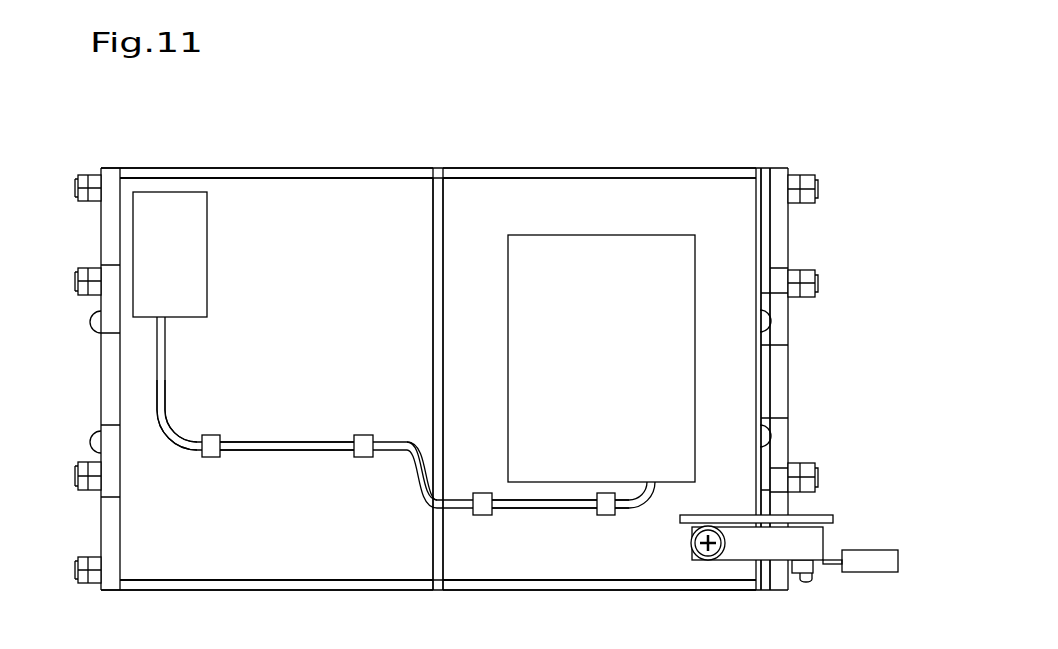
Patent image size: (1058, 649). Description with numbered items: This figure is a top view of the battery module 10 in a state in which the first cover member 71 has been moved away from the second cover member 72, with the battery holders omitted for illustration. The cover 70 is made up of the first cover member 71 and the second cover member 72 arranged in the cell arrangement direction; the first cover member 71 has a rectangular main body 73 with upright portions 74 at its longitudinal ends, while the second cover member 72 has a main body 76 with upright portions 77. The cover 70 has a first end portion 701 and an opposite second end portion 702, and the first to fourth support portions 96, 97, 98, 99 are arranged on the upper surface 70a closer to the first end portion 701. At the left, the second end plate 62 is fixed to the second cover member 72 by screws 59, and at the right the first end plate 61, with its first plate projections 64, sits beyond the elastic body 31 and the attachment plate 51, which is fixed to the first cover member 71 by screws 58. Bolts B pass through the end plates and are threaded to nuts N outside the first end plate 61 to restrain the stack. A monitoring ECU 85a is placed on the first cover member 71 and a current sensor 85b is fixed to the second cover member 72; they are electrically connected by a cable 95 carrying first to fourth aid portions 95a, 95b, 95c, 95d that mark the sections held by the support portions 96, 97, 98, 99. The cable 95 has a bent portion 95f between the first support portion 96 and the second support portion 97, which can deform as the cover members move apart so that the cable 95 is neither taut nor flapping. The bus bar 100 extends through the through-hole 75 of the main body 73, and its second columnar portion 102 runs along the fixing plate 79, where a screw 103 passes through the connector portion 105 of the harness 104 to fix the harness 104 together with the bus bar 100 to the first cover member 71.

The battery module 10 is at (75, 122).
The second end plate 62 is at (112, 178).
The first plate projection 64 is at (112, 275).
The upright portion 77 is at (261, 173).
The upper surface 70a is at (334, 195).
The main body 76 is at (310, 567).
The cover 70 is at (483, 122).
The second cover member 72 is at (402, 168).
The first cover member 71 is at (468, 168).
The second end portion 702 is at (497, 193).
The first end portion 701 is at (467, 570).
The upright portion 74 is at (597, 172).
The main body 73 is at (540, 572).
The through-hole 75 is at (712, 563).
The attachment plate 51 is at (758, 170).
The elastic body 31 is at (767, 378).
The first end plate 61 is at (778, 175).
The screw 58 is at (770, 317).
The screw 59 is at (95, 333).
The bolt B is at (83, 203).
The nut N is at (793, 178).
The monitoring ECU 85a is at (685, 250).
The current sensor 85b is at (207, 248).
The cable 95 is at (278, 442).
The first aid portion 95a is at (497, 509).
The second aid portion 95b is at (352, 458).
The third aid portion 95c is at (587, 512).
The fourth aid portion 95d is at (197, 452).
The bent portion 95f is at (413, 496).
The first support portion 96 is at (482, 493).
The second support portion 97 is at (363, 435).
The third support portion 98 is at (607, 493).
The fourth support portion 99 is at (211, 435).
The bus bar 100 is at (690, 546).
The fixing plate 79 is at (822, 518).
The second columnar portion 102 is at (820, 543).
The screw 103 is at (805, 582).
The harness 104 is at (883, 572).
The connector portion 105 is at (833, 565).